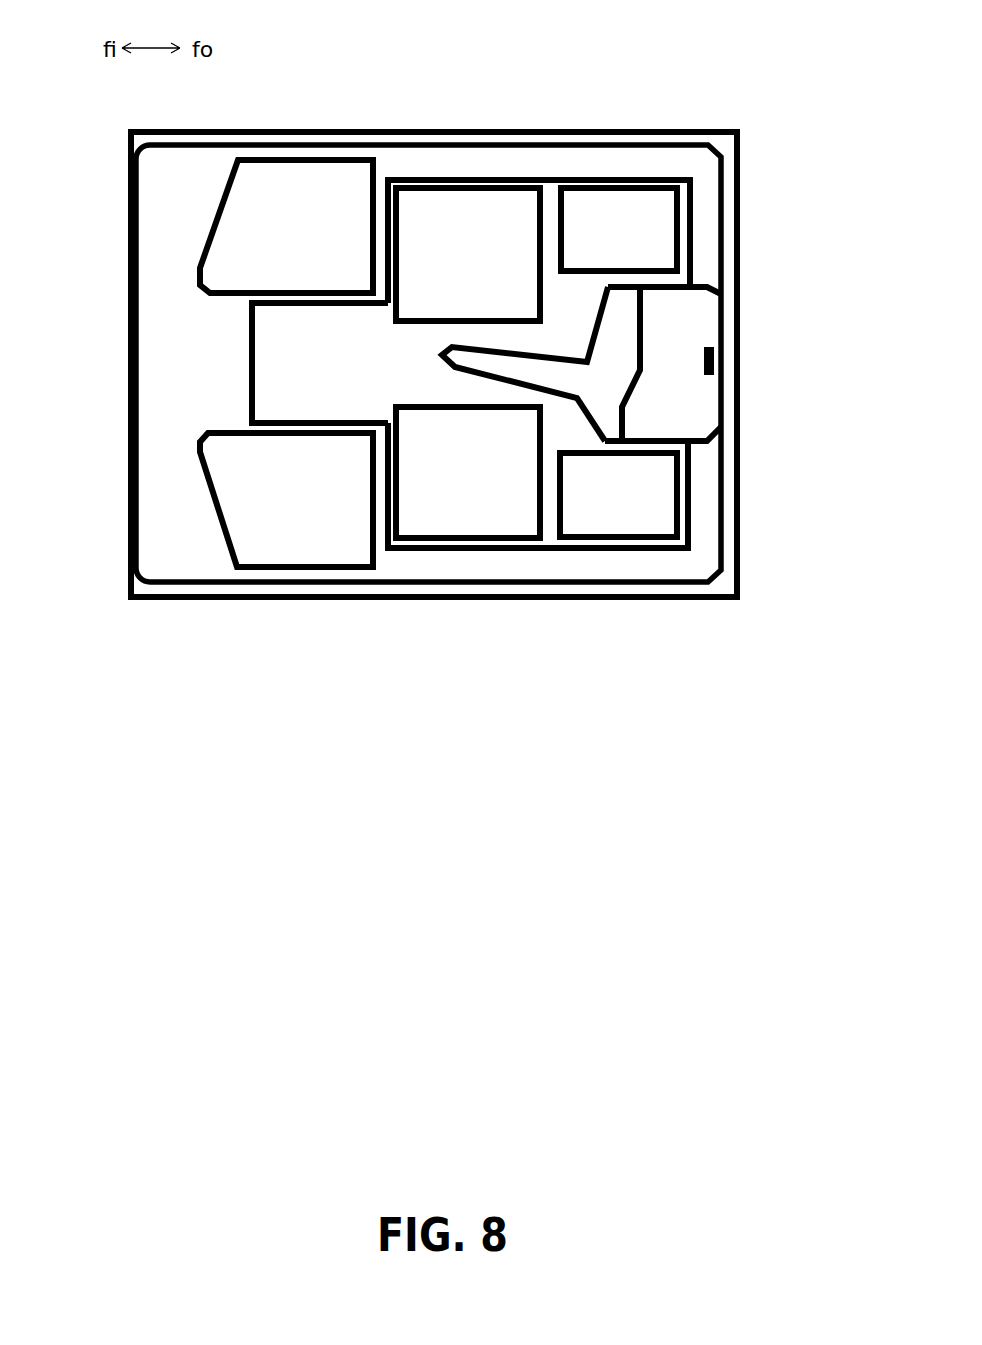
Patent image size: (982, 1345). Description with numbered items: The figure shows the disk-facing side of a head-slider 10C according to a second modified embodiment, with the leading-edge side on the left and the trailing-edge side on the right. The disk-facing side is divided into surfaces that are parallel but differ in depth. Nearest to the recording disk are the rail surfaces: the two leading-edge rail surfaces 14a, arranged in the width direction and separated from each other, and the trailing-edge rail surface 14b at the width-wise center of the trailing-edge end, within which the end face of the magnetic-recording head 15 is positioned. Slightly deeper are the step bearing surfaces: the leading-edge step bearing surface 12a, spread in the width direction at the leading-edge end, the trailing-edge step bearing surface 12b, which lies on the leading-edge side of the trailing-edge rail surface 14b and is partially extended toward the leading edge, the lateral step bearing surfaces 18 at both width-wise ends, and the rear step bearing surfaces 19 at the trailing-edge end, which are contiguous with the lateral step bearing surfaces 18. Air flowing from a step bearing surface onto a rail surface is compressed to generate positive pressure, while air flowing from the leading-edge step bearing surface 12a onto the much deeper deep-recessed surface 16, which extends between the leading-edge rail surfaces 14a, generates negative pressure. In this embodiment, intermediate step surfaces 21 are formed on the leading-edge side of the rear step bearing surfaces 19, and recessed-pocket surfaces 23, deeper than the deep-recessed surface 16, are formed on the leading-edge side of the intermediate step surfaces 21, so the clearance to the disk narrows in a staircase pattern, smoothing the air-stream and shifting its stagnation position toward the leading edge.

The head-slider 10C is at (665, 80).
The leading-edge step bearing surface 12a is at (165, 372).
The trailing-edge step bearing surface 12b is at (507, 368).
The leading-edge rail surfaces 14a is at (307, 187).
The trailing-edge rail surface 14b is at (683, 325).
The magnetic-recording head 15 is at (712, 360).
The deep-recessed surface 16 is at (307, 358).
The lateral step bearing surfaces 18 is at (542, 167).
The rear step bearing surfaces 19 is at (707, 230).
The intermediate step surfaces 21 is at (615, 217).
The recessed-pocket surfaces 23 is at (467, 215).